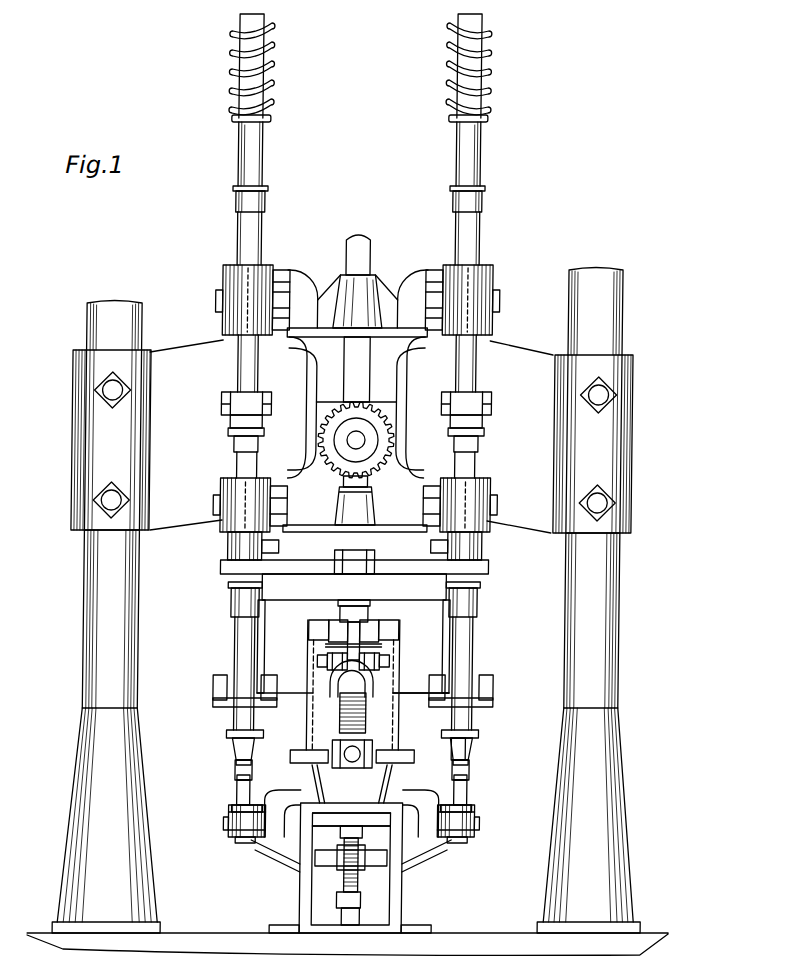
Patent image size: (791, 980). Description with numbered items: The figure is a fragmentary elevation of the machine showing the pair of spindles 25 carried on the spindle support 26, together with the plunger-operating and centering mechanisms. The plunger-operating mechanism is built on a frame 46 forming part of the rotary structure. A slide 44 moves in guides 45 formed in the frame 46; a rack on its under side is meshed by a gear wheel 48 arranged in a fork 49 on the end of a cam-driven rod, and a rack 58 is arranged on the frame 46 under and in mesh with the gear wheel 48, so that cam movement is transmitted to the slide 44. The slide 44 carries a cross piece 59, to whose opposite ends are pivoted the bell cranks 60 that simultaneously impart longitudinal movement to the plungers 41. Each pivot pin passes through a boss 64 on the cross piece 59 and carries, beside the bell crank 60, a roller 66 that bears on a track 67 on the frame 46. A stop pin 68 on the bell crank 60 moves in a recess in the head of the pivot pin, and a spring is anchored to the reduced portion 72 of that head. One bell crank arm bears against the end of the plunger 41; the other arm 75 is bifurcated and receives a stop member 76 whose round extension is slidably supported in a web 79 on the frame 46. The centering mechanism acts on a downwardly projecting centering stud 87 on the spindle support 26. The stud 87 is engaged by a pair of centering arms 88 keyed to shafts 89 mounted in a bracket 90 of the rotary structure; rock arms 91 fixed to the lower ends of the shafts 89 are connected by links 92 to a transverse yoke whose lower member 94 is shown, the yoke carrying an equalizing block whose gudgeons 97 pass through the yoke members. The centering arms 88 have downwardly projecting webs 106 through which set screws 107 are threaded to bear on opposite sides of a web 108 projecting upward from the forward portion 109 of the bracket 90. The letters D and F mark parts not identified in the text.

The spindle 25 is at (236, 229).
The spindle support 26 is at (177, 360).
The centering stud 87 is at (364, 613).
The centering arm 88 is at (324, 632).
The shaft 89 is at (315, 632).
The web 106 is at (335, 650).
The set screw 107 is at (330, 670).
The web 108 is at (375, 648).
The forward portion 109 is at (400, 700).
The bracket D is at (216, 686).
The bracket 90 is at (320, 687).
The rock arm 91 is at (317, 763).
The link 92 is at (280, 760).
The lower yoke member 94 is at (381, 803).
The guide 45 is at (316, 770).
The plunger 41 is at (234, 780).
The cross piece 59 is at (471, 768).
The web 79 is at (266, 790).
The roller 66 is at (260, 818).
The reduced portion 72 is at (243, 817).
The stop pin 68 is at (231, 826).
The bell crank 60 is at (238, 840).
The stop member 76 is at (234, 772).
The bifurcated arm 75 is at (239, 778).
The fastener F is at (239, 812).
The boss 64 is at (257, 848).
The track 67 is at (270, 860).
The frame 46 is at (313, 868).
The slide 44 is at (338, 820).
The gudgeon 97 is at (344, 810).
The gear wheel 48 is at (362, 872).
The fork 49 is at (352, 847).
The rack 58 is at (358, 887).